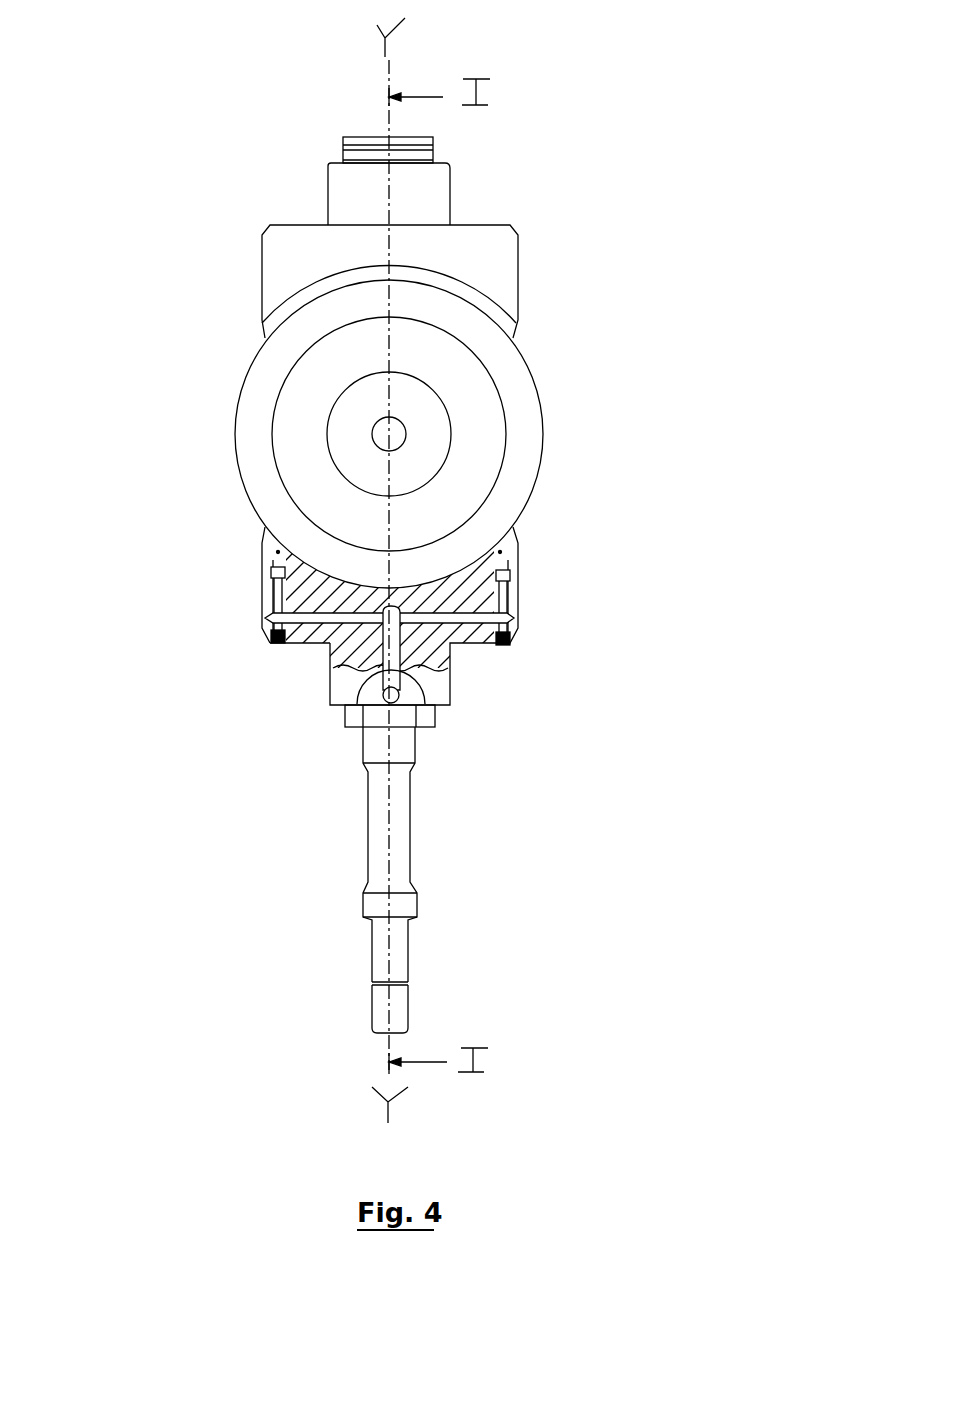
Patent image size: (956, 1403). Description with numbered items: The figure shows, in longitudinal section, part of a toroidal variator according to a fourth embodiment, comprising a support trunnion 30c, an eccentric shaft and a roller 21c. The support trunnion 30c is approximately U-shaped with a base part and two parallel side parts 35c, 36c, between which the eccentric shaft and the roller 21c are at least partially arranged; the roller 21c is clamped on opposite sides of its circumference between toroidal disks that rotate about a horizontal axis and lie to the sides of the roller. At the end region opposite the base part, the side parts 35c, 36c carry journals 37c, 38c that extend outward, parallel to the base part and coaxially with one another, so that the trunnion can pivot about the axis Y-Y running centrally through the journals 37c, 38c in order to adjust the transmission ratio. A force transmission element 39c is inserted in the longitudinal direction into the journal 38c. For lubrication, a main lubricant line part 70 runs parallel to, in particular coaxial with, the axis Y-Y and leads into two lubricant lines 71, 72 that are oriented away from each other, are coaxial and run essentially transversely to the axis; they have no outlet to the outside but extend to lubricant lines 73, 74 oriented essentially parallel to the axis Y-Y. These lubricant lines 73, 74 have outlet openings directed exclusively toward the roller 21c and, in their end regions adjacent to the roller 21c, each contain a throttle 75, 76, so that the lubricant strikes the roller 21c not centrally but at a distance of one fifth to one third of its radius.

The journal 37c is at (430, 190).
The side part 35c is at (493, 270).
The support trunnion 30c is at (457, 465).
The roller 21c is at (473, 460).
The side part 36c is at (512, 604).
The journal 38c is at (453, 670).
The force transmission element 39c is at (403, 862).
The main lubricant line part 70 is at (380, 685).
The lubricant line 71 is at (310, 643).
The lubricant line 72 is at (473, 647).
The lubricant line 73 is at (272, 606).
The lubricant line 74 is at (505, 570).
The throttle 75 is at (275, 570).
The throttle 76 is at (514, 566).